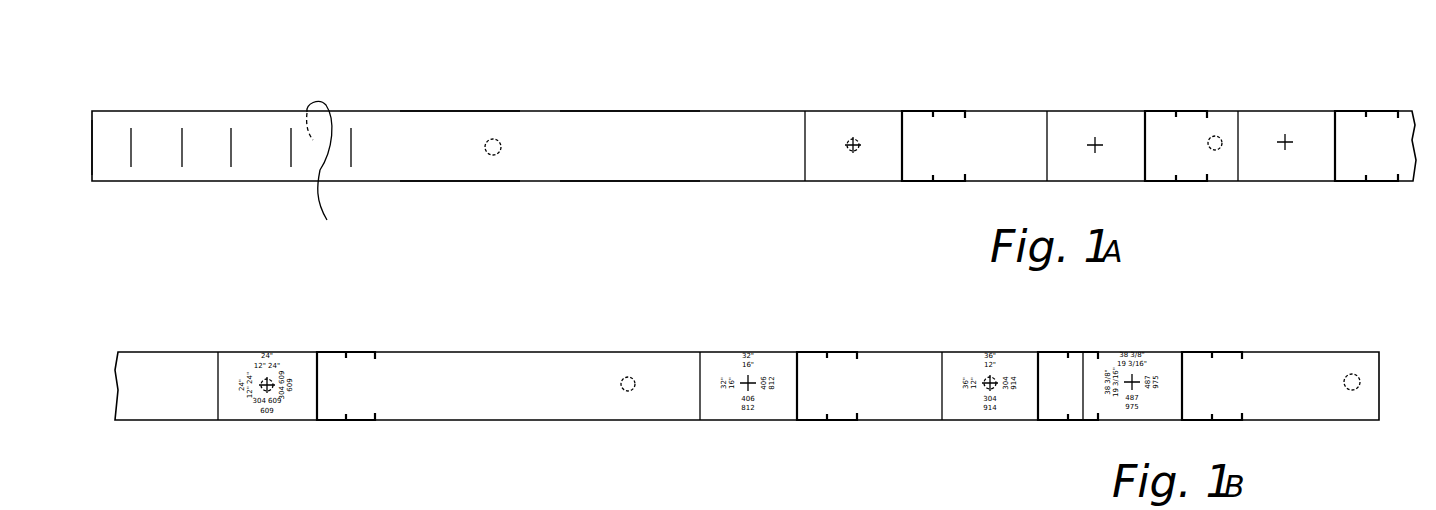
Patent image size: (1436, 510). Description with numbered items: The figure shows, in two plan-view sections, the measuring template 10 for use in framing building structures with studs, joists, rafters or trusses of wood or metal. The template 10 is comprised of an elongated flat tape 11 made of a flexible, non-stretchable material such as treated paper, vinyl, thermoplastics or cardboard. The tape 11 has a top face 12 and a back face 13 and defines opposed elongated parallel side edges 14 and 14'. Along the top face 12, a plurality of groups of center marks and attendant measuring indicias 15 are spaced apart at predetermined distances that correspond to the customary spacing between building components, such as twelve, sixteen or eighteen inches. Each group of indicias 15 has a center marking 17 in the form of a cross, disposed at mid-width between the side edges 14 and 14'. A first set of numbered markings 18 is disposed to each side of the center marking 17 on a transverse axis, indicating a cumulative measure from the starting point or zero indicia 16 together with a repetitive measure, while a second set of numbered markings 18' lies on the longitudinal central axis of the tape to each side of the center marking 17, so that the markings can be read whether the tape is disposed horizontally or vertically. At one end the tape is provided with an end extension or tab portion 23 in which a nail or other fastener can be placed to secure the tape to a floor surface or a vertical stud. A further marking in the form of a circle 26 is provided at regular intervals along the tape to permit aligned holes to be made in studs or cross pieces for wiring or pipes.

In FIG. 1A, the measuring template 10 is at (701, 86).
In FIG. 1A, the elongated flat tape 11 is at (630, 147).
In FIG. 1A, the top face 12 is at (583, 130).
In FIG. 1A, the back face 13 is at (330, 170).
In FIG. 1A, the side edge 14 is at (460, 81).
In FIG. 1A, the side edge 14' is at (460, 208).
In FIG. 1A, the measuring indicias 15 is at (840, 162).
In FIG. 1A, the 0 indicia 16 is at (132, 145).
In FIG. 1A, the center marking 17 is at (862, 140).
In FIG. 1A, the first set of numbered markings 18 is at (898, 115).
In FIG. 1A, the second set of numbered markings 18' is at (1136, 173).
In FIG. 1A, the end extension or tab portion 23 is at (92, 150).
In FIG. 1A, the circle 26 is at (1218, 150).
In FIG. 1B, the circle 26 is at (622, 393).